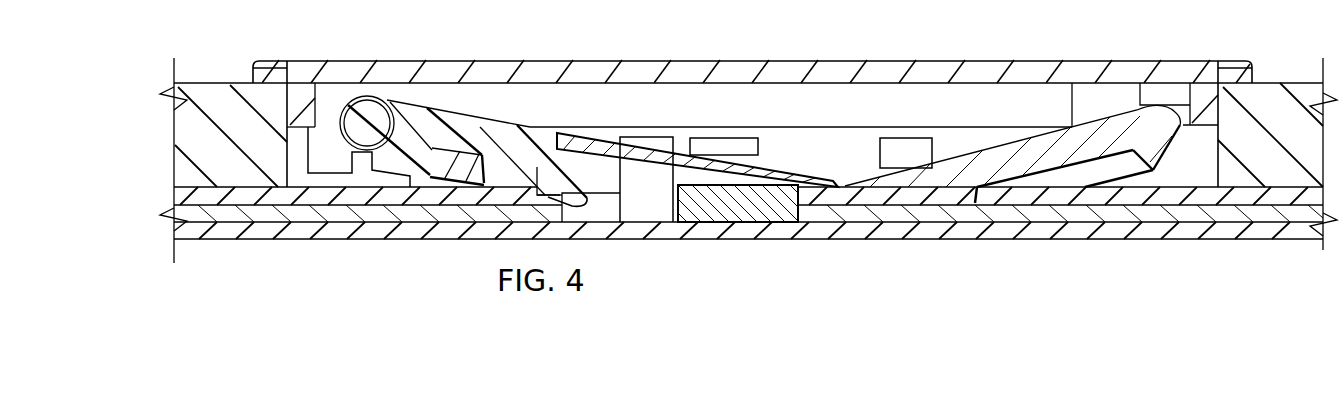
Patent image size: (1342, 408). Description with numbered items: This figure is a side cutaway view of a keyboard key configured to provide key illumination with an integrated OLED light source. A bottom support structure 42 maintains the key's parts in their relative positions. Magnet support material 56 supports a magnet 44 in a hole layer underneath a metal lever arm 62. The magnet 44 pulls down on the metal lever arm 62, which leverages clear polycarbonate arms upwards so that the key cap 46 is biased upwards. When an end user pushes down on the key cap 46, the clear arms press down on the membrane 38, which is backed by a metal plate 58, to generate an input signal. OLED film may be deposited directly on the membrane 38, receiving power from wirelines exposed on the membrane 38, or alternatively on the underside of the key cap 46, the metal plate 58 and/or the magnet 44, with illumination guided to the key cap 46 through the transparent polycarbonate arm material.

The membrane 38 is at (1013, 197).
The bottom support structure 42 is at (152, 186).
The magnet 44 is at (727, 212).
The key cap 46 is at (377, 62).
The magnet support material 56 is at (277, 230).
The metal plate 58 is at (387, 213).
The metal lever arm 62 is at (780, 182).